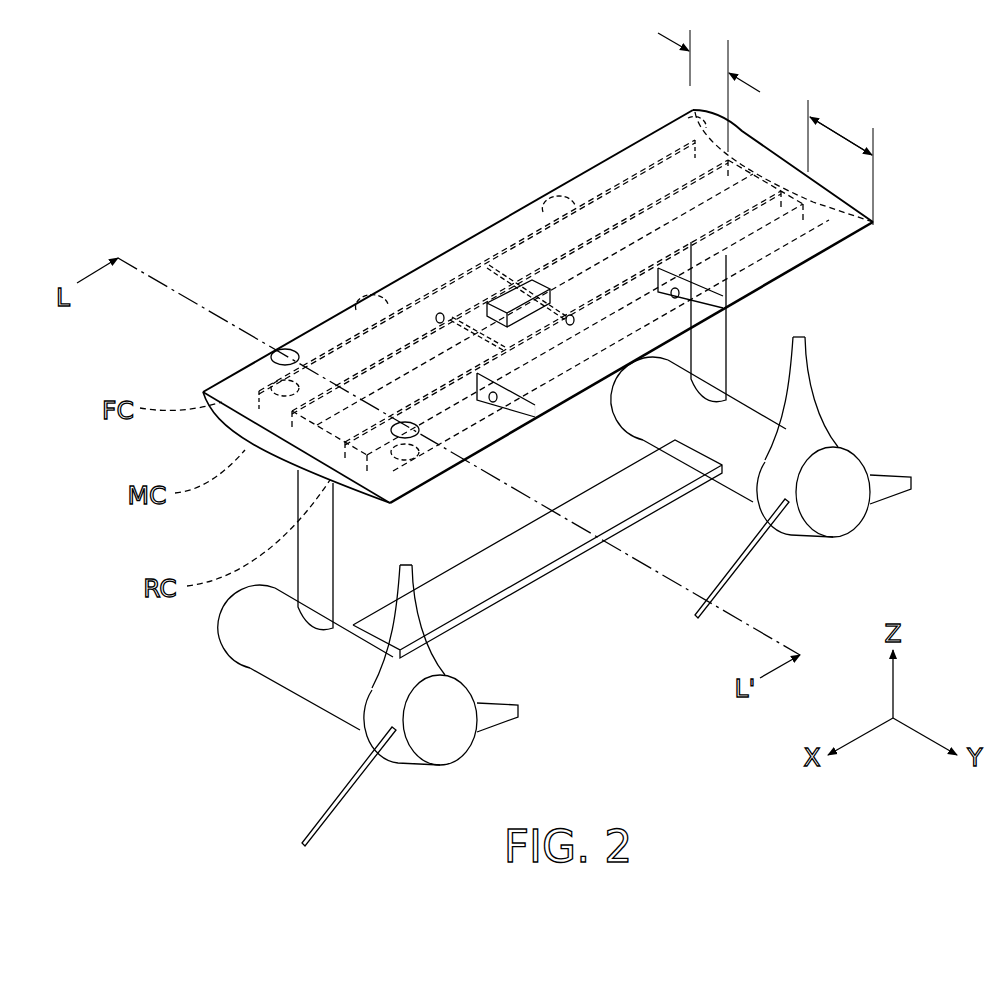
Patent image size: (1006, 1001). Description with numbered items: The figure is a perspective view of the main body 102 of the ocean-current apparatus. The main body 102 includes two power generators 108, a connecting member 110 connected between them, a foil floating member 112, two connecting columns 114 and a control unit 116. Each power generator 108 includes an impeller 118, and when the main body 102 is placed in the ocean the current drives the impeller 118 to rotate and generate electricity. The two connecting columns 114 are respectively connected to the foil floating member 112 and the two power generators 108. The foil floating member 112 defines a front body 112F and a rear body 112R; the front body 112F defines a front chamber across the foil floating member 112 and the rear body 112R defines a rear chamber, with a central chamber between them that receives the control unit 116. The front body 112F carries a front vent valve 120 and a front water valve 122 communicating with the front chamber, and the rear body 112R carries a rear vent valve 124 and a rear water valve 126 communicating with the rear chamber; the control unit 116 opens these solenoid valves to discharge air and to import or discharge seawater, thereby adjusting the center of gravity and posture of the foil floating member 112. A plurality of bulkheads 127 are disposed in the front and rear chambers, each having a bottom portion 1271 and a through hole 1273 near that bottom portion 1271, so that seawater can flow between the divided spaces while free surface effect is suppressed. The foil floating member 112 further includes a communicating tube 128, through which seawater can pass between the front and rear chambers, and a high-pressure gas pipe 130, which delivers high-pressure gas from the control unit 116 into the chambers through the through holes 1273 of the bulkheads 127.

The main body 102 is at (187, 90).
The power generator 108 is at (307, 662).
The connecting member 110 is at (450, 598).
The foil floating member 112 is at (766, 144).
The front body 112F is at (710, 89).
The rear body 112R is at (851, 162).
The connecting column 114 is at (317, 605).
The control unit 116 is at (528, 247).
The impeller 118 is at (385, 707).
The front vent valve 120 is at (287, 350).
The front water valve 122 is at (280, 388).
The rear vent valve 124 is at (405, 428).
The rear water valve 126 is at (400, 456).
The bulkhead 127 is at (373, 305).
The communicating tube 128 is at (447, 316).
The high-pressure gas pipe 130 is at (488, 300).
The bottom portion 1271 is at (512, 418).
The through hole 1273 is at (495, 402).